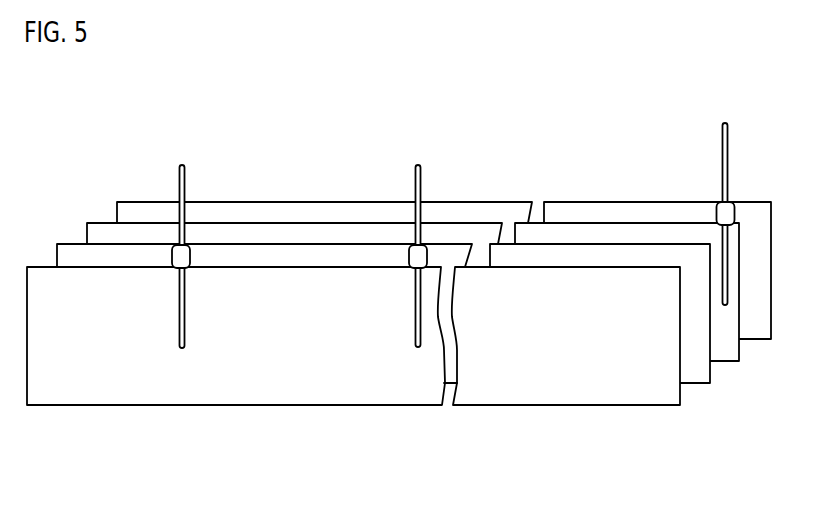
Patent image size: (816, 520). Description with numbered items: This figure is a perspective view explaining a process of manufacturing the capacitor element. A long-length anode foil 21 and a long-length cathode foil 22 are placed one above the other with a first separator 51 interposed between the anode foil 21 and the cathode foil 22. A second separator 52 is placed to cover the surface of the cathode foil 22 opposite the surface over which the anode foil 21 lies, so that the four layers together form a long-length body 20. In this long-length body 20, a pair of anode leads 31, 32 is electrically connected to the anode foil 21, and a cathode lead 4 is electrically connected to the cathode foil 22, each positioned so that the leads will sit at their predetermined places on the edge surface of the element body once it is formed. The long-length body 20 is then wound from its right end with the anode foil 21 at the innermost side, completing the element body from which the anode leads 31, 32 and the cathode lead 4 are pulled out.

The long-length body 20 is at (407, 350).
The anode foil 21 is at (354, 372).
The first separator 51 is at (694, 373).
The cathode foil 22 is at (724, 352).
The second separator 52 is at (756, 330).
The anode lead 31 is at (193, 173).
The anode lead 32 is at (423, 180).
The cathode lead 4 is at (728, 155).